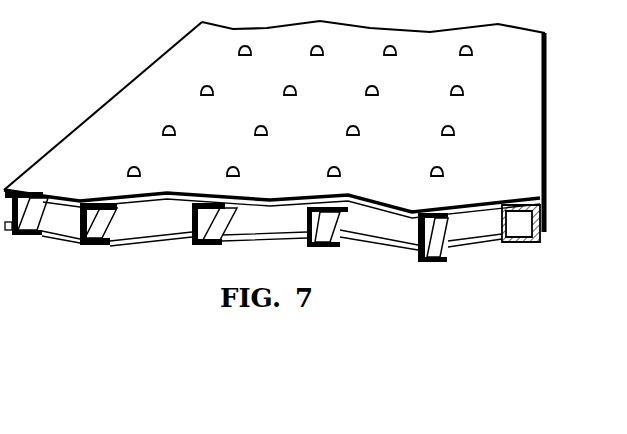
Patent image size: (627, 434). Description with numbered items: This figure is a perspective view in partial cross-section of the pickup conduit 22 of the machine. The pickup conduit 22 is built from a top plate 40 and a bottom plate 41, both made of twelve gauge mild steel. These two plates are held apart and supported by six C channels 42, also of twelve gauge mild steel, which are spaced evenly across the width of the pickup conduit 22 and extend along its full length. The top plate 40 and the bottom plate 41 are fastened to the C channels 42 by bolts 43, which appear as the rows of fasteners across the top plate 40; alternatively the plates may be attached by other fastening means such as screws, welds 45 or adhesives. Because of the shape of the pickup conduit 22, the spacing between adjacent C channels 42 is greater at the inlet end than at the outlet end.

The pickup conduit 22 is at (545, 70).
The top plate 40 is at (517, 130).
The bottom plate 41 is at (397, 230).
The C channel 42 is at (432, 237).
The bolt 43 is at (445, 171).
The weld 45 is at (548, 222).